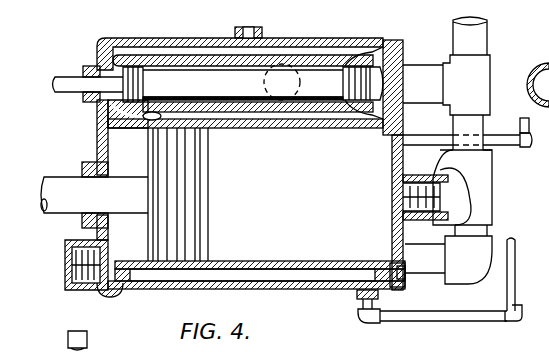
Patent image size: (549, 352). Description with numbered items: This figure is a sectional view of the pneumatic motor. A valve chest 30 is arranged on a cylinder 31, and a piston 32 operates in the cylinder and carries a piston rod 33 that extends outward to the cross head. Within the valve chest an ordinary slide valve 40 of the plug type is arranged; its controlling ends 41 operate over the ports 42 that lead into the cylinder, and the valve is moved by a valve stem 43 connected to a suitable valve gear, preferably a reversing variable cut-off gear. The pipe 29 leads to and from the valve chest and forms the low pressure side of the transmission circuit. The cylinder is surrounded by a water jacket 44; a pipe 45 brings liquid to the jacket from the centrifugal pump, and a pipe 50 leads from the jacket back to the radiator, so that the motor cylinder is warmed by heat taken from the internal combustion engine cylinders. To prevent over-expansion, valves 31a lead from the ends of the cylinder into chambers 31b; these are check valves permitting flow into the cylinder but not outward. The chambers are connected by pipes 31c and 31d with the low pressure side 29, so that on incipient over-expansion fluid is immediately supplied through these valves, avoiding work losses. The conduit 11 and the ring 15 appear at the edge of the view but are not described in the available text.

The conduit 11 is at (542, 240).
The ring 15 is at (534, 72).
The pipe 29 is at (481, 45).
The valve chest 30 is at (189, 66).
The cylinder 31 is at (322, 258).
The valves 31a is at (95, 285).
The chambers 31b is at (80, 275).
The pipe 31c is at (479, 125).
The pipe 31d is at (432, 276).
The piston 32 is at (200, 227).
The piston rod 33 is at (68, 206).
The slide valve 40 is at (253, 78).
The controlling ends 41 is at (121, 63).
The ports 42 is at (112, 130).
The valve stem 43 is at (71, 84).
The water jacket 44 is at (178, 275).
The pipe 45 is at (513, 288).
The pipe 50 is at (500, 143).